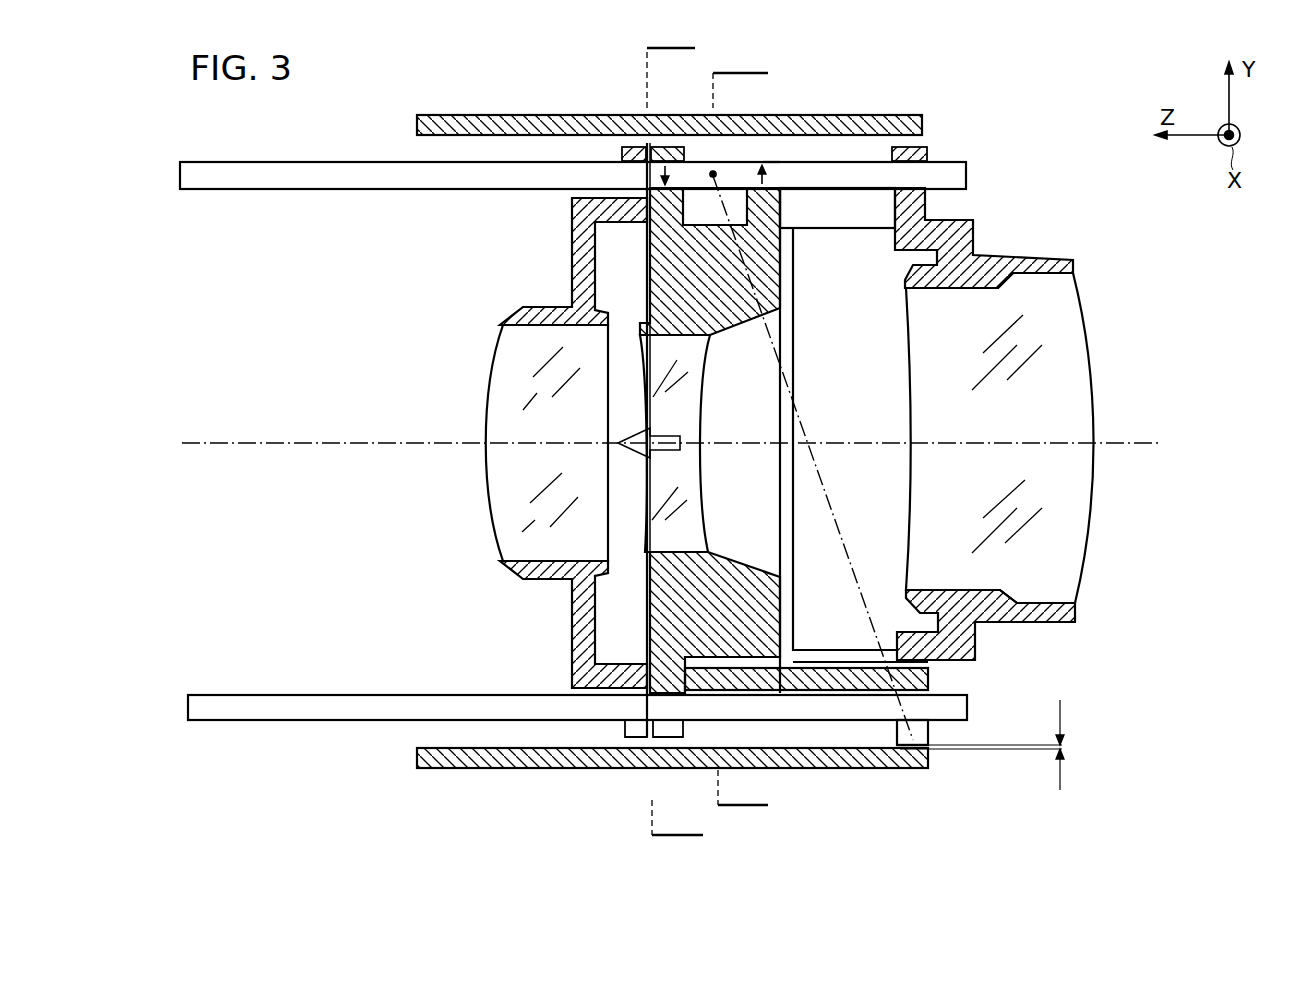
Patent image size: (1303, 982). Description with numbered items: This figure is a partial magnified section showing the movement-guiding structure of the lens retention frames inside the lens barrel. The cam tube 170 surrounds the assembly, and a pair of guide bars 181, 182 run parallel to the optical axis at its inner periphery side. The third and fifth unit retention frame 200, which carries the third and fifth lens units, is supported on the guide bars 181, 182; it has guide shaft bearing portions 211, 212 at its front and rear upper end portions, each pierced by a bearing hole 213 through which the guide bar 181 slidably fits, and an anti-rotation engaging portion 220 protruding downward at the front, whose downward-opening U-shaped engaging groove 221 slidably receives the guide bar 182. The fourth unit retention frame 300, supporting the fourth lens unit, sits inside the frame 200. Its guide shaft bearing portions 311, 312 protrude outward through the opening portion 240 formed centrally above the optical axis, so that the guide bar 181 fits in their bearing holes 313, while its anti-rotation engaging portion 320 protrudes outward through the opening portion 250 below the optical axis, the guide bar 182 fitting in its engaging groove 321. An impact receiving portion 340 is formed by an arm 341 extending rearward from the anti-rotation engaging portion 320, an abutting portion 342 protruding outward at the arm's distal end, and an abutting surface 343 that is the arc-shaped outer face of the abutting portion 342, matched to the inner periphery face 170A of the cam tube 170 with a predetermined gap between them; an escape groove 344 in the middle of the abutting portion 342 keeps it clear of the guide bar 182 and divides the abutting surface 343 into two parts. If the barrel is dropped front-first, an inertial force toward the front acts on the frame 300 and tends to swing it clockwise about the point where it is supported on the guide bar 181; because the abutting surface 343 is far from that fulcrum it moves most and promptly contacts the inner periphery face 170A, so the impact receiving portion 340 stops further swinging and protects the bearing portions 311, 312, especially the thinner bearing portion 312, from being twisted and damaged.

The cam tube 170 is at (892, 114).
The inner periphery face 170A is at (818, 745).
The guide bar 181 is at (305, 162).
The guide bar 182 is at (320, 695).
The third and fifth unit retention frame 200 is at (988, 219).
The guide shaft bearing portion 211 is at (633, 146).
The guide shaft bearing portion 212 is at (928, 153).
The bearing hole 213 is at (622, 162).
The anti-rotation engaging portion 220 is at (628, 734).
The engaging groove 221 is at (637, 737).
The opening portion 240 is at (850, 212).
The opening portion 250 is at (800, 600).
The fourth unit retention frame 300 is at (788, 300).
The guide shaft bearing portion 311 is at (665, 146).
The guide shaft bearing portion 312 is at (778, 154).
The bearing hole 313 is at (697, 162).
The anti-rotation engaging portion 320 is at (690, 737).
The engaging groove 321 is at (683, 737).
The impact receiving portion 340 is at (854, 759).
The arm 341 is at (895, 775).
The abutting portion 342 is at (833, 677).
The abutting surface 343 is at (928, 768).
The escape groove 344 is at (917, 734).